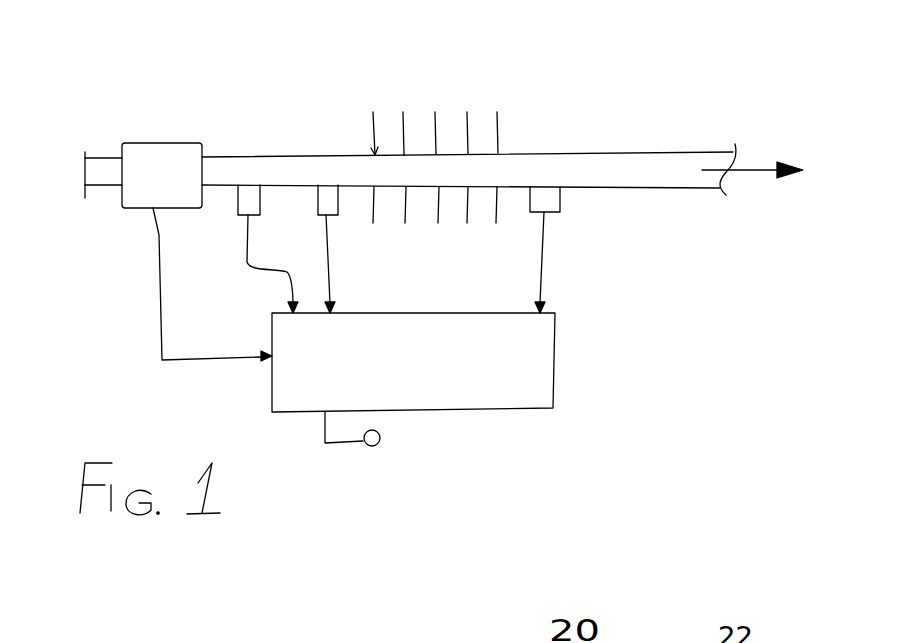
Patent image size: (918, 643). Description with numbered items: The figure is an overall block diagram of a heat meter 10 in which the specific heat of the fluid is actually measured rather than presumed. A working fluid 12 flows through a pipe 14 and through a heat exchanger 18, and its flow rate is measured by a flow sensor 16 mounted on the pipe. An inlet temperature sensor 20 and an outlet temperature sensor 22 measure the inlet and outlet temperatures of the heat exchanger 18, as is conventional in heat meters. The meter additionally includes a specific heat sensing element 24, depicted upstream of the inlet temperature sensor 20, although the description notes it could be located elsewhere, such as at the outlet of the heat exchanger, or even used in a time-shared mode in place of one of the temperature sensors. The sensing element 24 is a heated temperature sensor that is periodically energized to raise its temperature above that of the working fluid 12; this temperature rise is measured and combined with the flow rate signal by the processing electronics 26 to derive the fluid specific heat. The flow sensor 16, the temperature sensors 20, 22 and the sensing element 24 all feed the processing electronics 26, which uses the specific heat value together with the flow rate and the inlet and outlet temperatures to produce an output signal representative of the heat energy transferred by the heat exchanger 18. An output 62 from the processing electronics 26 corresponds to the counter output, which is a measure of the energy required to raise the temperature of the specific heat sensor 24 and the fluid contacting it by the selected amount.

The heat meter 10 is at (640, 418).
The working fluid 12 is at (752, 176).
The pipe 14 is at (233, 156).
The flow sensor 16 is at (180, 192).
The heat exchanger 18 is at (483, 130).
The inlet temperature sensor 20 is at (333, 213).
The outlet temperature sensor 22 is at (547, 205).
The specific heat sensing element 24 is at (243, 201).
The processing electronics 26 is at (542, 360).
The counter output 62 is at (373, 446).